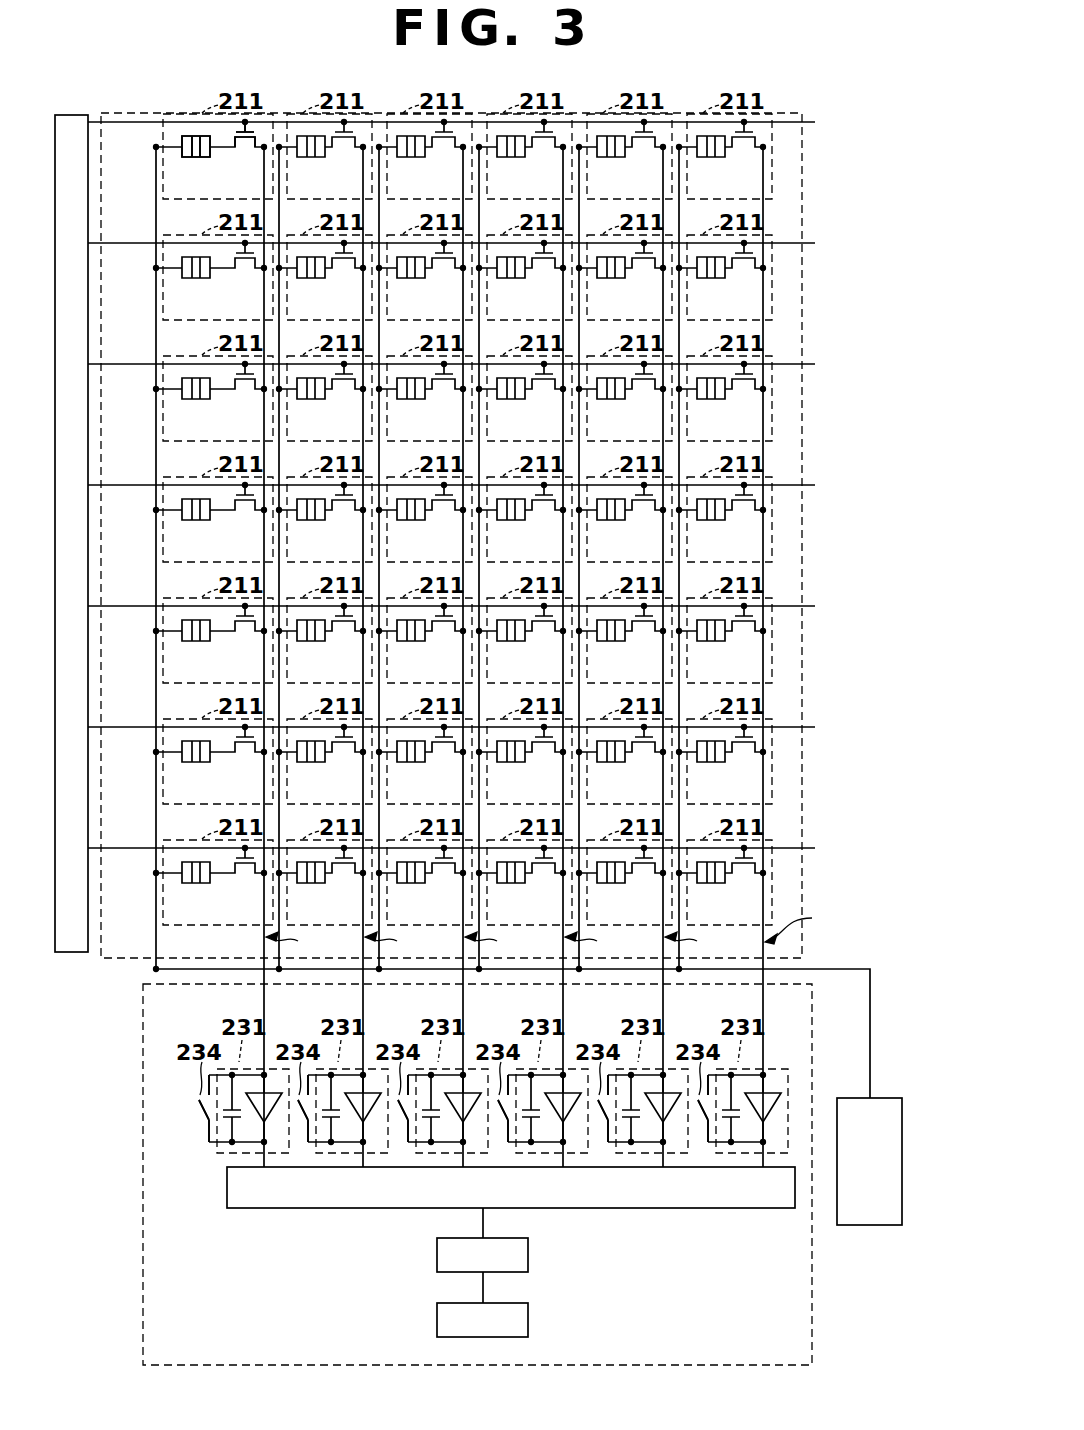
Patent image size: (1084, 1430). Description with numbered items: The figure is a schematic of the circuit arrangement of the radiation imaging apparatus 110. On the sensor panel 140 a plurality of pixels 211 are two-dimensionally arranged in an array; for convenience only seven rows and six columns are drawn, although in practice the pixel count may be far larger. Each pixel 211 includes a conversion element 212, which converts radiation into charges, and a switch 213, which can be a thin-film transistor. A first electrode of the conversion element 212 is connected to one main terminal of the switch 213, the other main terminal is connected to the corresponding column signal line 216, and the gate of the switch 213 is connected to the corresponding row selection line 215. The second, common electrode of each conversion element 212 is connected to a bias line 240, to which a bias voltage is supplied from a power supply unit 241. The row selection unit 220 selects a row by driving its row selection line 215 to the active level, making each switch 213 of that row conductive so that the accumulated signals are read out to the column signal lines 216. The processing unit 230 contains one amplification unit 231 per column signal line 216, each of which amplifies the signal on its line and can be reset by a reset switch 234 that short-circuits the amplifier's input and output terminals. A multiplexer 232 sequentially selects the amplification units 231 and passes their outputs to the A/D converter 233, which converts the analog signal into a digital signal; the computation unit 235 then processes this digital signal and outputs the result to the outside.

The radiation imaging apparatus 110 is at (108, 1182).
The sensor panel 140 is at (787, 113).
The pixel 211 is at (463, 507).
The conversion element 212 is at (193, 158).
The switch 213 is at (243, 151).
The row selection line 215 is at (125, 122).
The column signal line 216 is at (765, 818).
The row selection unit 220 is at (68, 113).
The processing unit 230 is at (812, 1340).
The amplification unit 231 is at (482, 1084).
The multiplexer 232 is at (745, 1208).
The A/D converter 233 is at (437, 1256).
The reset switch 234 is at (453, 1108).
The computation unit 235 is at (437, 1320).
The bias line 240 is at (872, 968).
The power supply unit 241 is at (899, 1094).